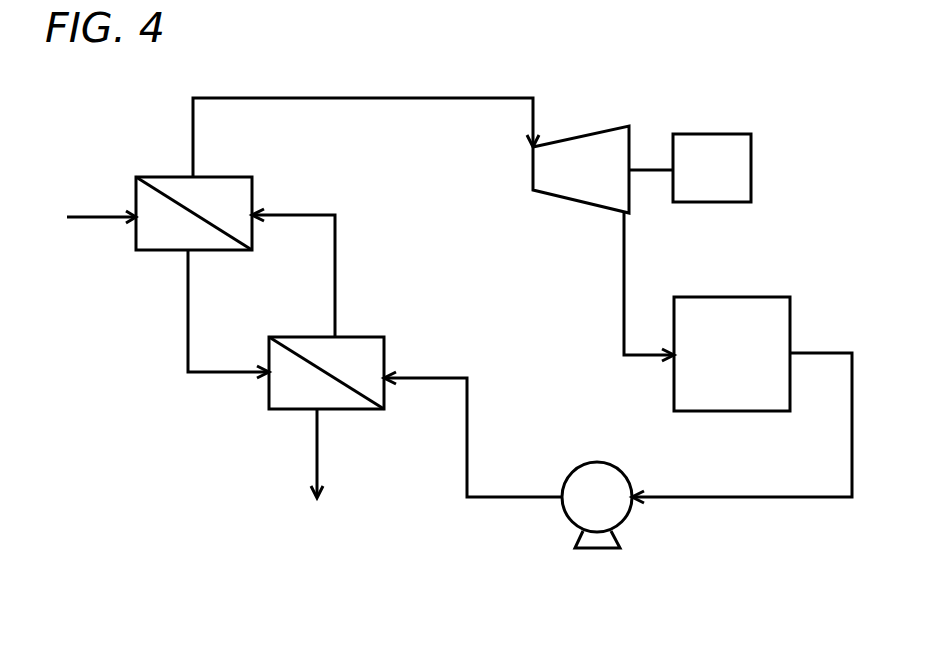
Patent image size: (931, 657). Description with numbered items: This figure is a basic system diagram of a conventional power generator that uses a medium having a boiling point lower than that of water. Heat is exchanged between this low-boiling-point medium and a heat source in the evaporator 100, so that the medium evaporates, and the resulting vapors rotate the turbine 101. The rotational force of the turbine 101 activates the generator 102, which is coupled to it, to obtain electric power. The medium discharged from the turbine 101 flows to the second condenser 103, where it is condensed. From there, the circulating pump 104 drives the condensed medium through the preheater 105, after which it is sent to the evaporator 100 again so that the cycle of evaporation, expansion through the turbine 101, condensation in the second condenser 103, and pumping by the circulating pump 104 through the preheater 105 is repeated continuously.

The evaporator 100 is at (241, 177).
The turbine 101 is at (594, 130).
The generator 102 is at (731, 134).
The second condenser 103 is at (767, 297).
The circulating pump 104 is at (627, 519).
The preheater 105 is at (373, 337).